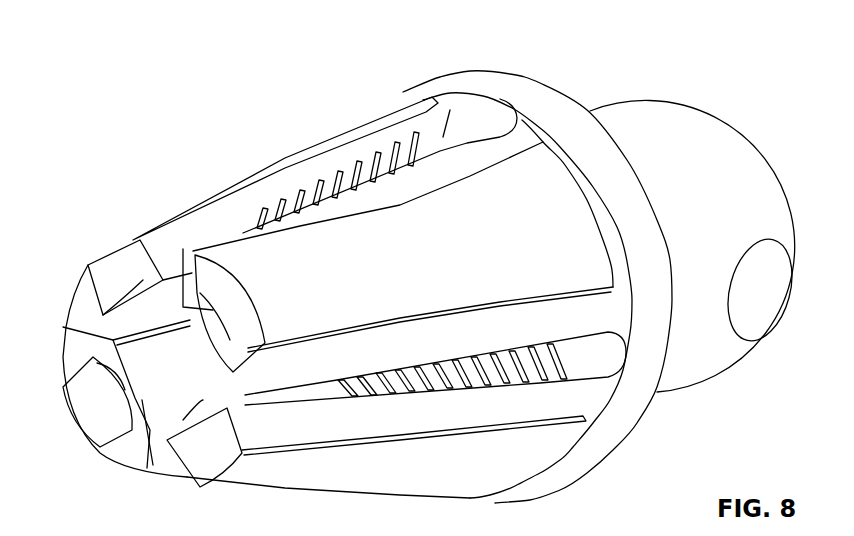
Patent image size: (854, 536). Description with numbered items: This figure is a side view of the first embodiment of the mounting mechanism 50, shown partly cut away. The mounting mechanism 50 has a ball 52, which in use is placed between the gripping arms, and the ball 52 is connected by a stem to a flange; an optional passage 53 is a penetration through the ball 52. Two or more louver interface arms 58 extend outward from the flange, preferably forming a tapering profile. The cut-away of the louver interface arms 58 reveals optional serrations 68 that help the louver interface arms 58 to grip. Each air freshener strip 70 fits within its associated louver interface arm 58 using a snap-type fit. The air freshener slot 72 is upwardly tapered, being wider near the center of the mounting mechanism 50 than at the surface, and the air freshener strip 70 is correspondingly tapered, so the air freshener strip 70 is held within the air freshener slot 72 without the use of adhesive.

The mounting mechanism 50 is at (252, 101).
The ball 52 is at (712, 204).
The passage 53 is at (778, 296).
The louver interface arms 58 is at (85, 298).
The serrations 68 is at (425, 127).
The air freshener strip 70 is at (240, 183).
The air freshener slot 72 is at (120, 300).